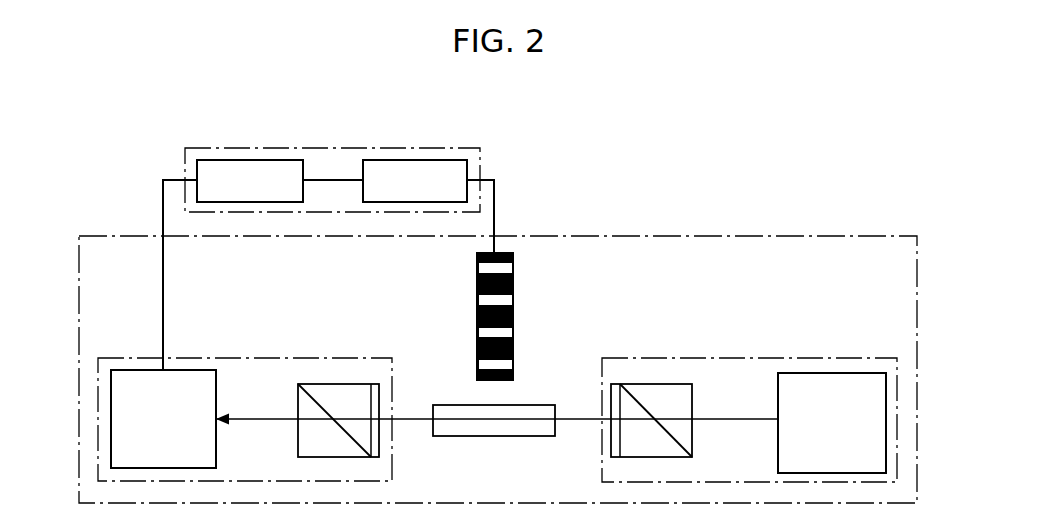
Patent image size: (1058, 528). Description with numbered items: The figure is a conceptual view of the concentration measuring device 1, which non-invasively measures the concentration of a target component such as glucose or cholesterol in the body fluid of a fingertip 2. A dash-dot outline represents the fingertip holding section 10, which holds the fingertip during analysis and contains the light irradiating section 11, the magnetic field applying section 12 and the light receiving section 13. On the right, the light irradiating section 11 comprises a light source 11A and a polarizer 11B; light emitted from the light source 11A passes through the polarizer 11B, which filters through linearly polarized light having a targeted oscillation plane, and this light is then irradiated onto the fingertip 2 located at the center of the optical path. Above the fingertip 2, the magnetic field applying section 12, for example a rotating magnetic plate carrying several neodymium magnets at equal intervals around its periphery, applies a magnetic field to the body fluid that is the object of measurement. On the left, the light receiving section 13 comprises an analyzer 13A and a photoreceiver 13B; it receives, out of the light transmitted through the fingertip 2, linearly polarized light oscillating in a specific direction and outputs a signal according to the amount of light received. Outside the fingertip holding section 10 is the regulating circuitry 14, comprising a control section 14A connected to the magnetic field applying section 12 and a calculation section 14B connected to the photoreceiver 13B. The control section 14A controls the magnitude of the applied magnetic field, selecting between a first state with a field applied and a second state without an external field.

The concentration measuring device 1 is at (593, 173).
The fingertip 2 is at (535, 436).
The fingertip holding section 10 is at (795, 237).
The light irradiating section 11 is at (785, 354).
The light source 11A is at (865, 373).
The polarizer 11B is at (680, 384).
The magnetic field applying section 12 is at (514, 298).
The light receiving section 13 is at (259, 353).
The analyzer 13A is at (350, 384).
The photoreceiver 13B is at (133, 370).
The regulating circuitry 14 is at (362, 143).
The control section 14A is at (436, 160).
The calculation section 14B is at (262, 160).